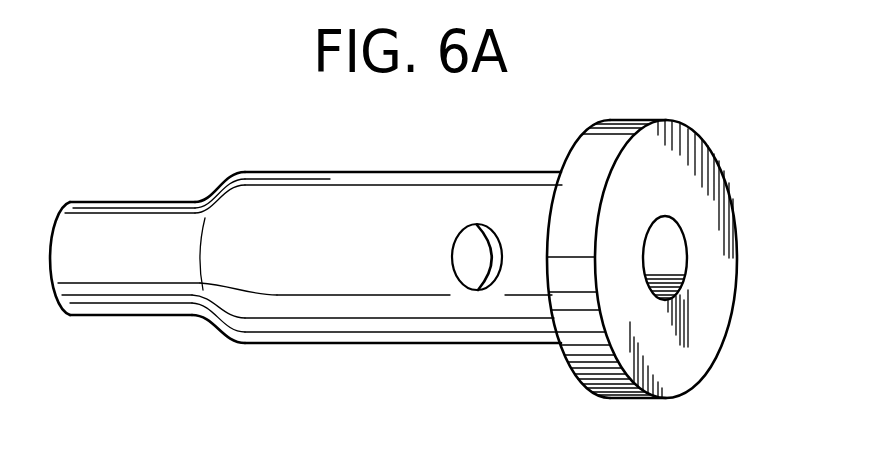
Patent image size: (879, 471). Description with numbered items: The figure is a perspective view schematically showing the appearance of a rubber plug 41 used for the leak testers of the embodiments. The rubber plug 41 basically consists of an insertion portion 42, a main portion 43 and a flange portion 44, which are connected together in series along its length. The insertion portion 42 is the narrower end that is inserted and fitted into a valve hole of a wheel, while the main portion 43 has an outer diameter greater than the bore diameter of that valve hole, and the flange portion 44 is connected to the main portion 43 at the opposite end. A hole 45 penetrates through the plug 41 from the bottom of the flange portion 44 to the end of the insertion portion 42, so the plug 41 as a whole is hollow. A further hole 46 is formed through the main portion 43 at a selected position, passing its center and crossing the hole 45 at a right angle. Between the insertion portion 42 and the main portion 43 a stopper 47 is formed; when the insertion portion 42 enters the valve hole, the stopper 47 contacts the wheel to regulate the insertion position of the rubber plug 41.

The rubber plug 41 is at (542, 116).
The insertion portion 42 is at (107, 264).
The main portion 43 is at (302, 207).
The flange portion 44 is at (682, 358).
The hole 45 is at (670, 252).
The hole 46 is at (483, 265).
The stopper 47 is at (235, 315).